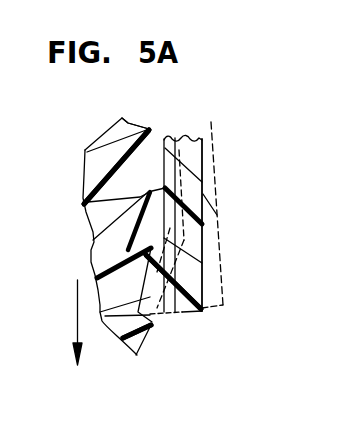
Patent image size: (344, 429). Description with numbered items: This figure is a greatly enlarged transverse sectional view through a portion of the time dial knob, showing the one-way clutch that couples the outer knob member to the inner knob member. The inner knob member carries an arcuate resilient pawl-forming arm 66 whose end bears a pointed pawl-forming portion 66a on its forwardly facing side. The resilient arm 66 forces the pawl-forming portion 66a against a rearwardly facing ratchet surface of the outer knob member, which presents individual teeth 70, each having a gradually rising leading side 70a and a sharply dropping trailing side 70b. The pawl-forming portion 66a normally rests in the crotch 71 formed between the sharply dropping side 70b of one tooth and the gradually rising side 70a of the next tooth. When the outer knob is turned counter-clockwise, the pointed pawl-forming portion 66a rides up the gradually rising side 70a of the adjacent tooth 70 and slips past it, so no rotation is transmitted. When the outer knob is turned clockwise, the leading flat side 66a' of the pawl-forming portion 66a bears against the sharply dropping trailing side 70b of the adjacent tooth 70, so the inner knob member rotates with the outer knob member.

The teeth 70 is at (125, 155).
The gradually rising leading side 70a is at (138, 187).
The sharply dropping trailing side 70b is at (130, 123).
The arcuate resilient pawl-forming arm 66 is at (202, 192).
The pointed pawl-forming portion 66a is at (218, 282).
The leading flat side 66a' is at (179, 340).
The crotch 71 is at (103, 318).